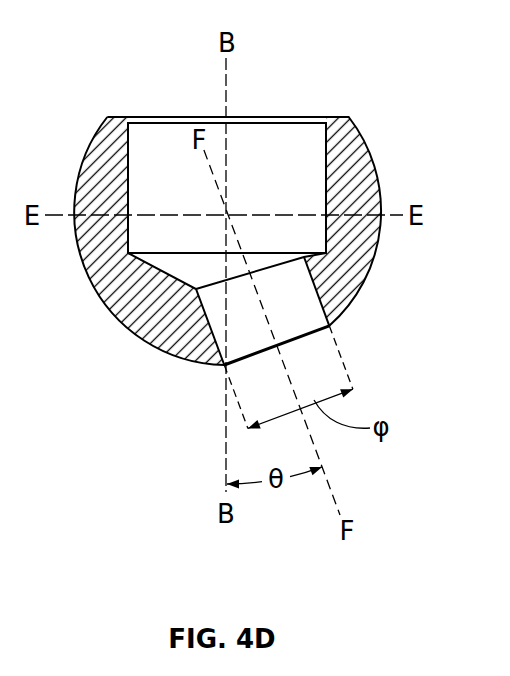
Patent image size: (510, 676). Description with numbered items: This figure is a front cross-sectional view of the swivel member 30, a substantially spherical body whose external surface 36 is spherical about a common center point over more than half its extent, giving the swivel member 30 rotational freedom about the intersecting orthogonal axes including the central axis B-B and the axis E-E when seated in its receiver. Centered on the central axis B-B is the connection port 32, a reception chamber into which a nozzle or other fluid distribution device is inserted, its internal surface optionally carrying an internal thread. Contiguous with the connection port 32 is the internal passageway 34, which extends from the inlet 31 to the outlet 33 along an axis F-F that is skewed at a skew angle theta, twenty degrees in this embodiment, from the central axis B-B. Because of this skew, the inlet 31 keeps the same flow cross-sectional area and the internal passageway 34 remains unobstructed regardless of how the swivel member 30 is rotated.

The swivel member 30 is at (96, 289).
The inlet 31 is at (293, 327).
The connection port 32 is at (293, 127).
The outlet 33 is at (256, 147).
The internal passageway 34 is at (222, 313).
The external surface 36 is at (88, 150).